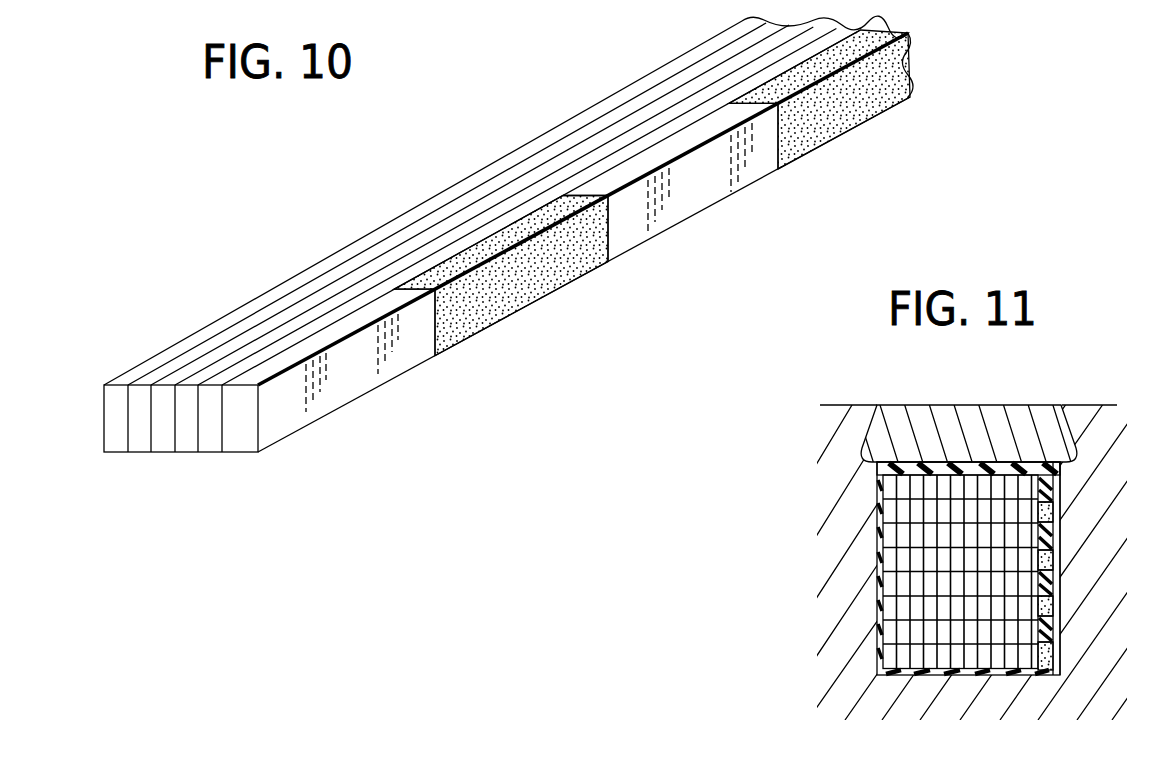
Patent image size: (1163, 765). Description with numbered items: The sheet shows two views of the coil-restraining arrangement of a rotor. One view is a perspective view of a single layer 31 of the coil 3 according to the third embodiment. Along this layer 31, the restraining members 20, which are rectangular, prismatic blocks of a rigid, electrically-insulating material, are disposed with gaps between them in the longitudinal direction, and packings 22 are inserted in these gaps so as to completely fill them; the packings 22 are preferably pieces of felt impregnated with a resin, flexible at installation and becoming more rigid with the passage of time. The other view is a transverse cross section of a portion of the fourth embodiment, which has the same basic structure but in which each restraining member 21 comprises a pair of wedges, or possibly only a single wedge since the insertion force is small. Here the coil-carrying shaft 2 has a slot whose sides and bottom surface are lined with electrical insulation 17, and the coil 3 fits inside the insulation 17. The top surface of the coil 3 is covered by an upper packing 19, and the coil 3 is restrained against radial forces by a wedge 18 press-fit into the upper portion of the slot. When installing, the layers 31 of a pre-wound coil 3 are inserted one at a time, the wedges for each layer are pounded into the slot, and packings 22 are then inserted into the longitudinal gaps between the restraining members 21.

In FIG. 11, the coil-carrying shaft 2 is at (1096, 418).
In FIG. 11, the coil 3 is at (920, 662).
In FIG. 11, the electrical insulation 17 is at (1062, 490).
In FIG. 11, the wedge 18 is at (954, 425).
In FIG. 11, the upper packing 19 is at (1000, 467).
In FIG. 10, the restraining member 20 is at (710, 188).
In FIG. 11, the restraining member 21 is at (1057, 580).
In FIG. 10, the packing 22 is at (550, 282).
In FIG. 11, the packing 22 is at (1057, 555).
In FIG. 10, the layer 31 is at (100, 430).